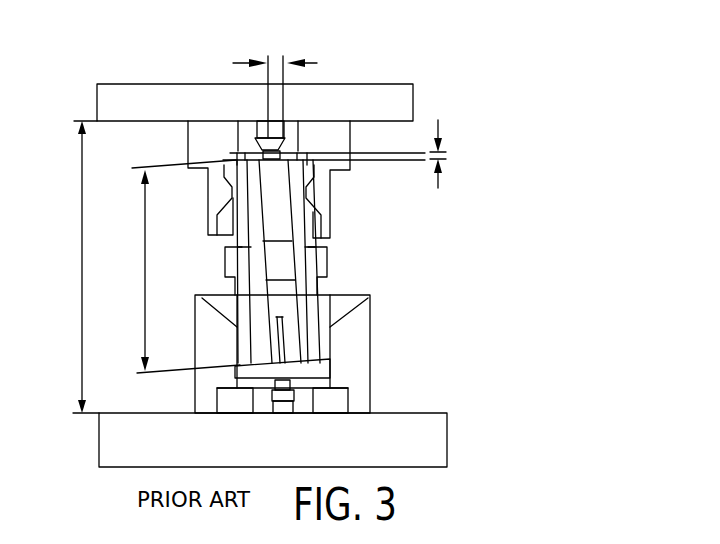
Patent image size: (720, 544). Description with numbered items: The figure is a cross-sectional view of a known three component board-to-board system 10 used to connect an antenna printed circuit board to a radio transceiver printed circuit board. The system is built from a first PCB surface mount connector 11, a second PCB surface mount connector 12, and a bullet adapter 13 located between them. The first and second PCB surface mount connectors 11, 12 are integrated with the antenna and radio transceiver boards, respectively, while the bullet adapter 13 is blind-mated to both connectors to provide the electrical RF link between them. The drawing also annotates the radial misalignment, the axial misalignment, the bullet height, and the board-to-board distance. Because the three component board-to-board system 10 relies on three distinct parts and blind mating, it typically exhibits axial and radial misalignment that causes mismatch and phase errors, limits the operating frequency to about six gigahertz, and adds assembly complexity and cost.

The three component board-to-board system 10 is at (72, 82).
The first PCB surface mount connector 11 is at (200, 152).
The second PCB surface mount connector 12 is at (363, 377).
The bullet adapter 13 is at (313, 255).